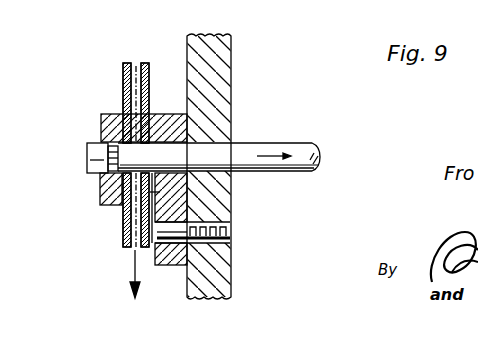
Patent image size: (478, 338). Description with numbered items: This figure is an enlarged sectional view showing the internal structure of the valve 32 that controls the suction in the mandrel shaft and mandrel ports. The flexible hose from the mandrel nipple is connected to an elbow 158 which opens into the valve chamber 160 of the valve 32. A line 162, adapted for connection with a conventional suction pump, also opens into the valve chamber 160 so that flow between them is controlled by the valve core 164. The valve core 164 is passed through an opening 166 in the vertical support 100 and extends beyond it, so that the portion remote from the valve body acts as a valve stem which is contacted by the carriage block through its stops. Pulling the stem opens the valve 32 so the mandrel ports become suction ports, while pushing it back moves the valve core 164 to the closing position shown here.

The vertical support 100 is at (232, 57).
The elbow 158 is at (148, 70).
The valve chamber 160 is at (125, 135).
The line 162 is at (122, 220).
The valve core 164 is at (87, 160).
The opening 166 is at (236, 118).
The valve 32 is at (100, 187).